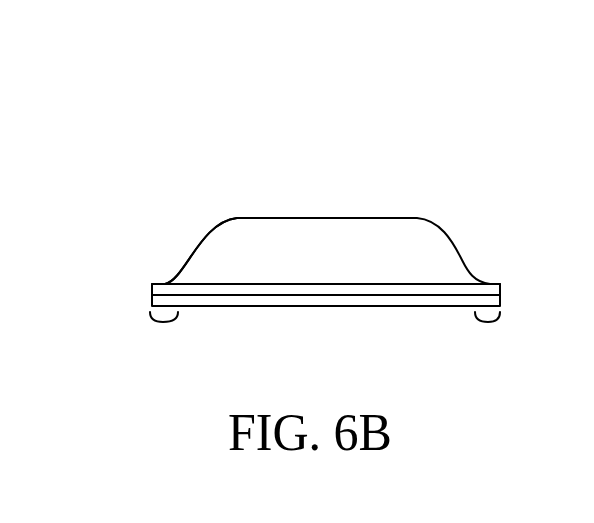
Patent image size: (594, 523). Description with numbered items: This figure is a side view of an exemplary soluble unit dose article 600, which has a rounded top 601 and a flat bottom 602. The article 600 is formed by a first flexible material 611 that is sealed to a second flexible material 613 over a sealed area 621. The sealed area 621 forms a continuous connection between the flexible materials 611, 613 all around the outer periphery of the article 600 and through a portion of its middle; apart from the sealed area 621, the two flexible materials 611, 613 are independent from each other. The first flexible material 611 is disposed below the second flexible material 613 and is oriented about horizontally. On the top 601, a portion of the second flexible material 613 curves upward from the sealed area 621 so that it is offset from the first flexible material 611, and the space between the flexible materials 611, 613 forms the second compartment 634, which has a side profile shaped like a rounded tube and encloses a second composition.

The soluble unit dose article 600 is at (186, 140).
The rounded top 601 is at (229, 182).
The second compartment 634 is at (358, 252).
The second flexible material 613 is at (205, 240).
The first flexible material 611 is at (308, 306).
The sealed area 621 is at (163, 322).
The flat bottom 602 is at (233, 344).